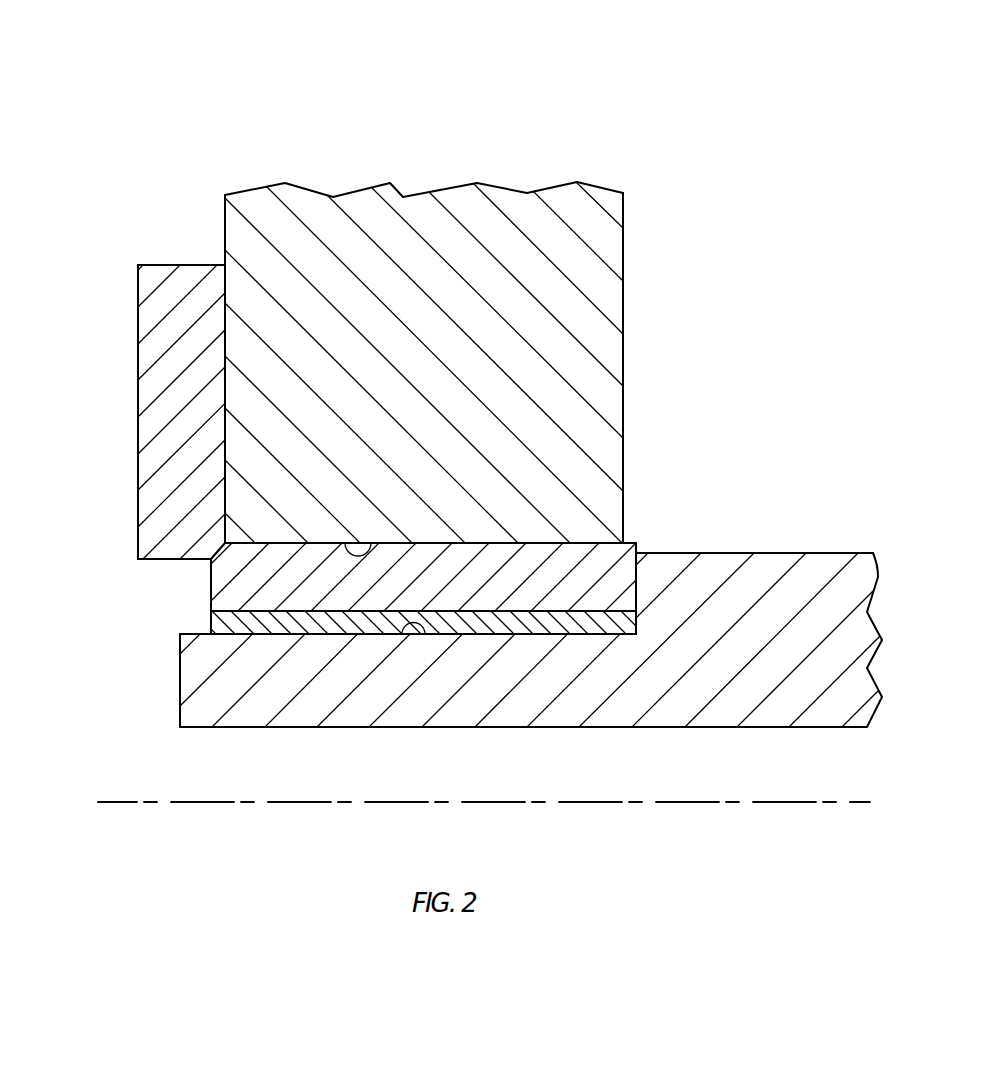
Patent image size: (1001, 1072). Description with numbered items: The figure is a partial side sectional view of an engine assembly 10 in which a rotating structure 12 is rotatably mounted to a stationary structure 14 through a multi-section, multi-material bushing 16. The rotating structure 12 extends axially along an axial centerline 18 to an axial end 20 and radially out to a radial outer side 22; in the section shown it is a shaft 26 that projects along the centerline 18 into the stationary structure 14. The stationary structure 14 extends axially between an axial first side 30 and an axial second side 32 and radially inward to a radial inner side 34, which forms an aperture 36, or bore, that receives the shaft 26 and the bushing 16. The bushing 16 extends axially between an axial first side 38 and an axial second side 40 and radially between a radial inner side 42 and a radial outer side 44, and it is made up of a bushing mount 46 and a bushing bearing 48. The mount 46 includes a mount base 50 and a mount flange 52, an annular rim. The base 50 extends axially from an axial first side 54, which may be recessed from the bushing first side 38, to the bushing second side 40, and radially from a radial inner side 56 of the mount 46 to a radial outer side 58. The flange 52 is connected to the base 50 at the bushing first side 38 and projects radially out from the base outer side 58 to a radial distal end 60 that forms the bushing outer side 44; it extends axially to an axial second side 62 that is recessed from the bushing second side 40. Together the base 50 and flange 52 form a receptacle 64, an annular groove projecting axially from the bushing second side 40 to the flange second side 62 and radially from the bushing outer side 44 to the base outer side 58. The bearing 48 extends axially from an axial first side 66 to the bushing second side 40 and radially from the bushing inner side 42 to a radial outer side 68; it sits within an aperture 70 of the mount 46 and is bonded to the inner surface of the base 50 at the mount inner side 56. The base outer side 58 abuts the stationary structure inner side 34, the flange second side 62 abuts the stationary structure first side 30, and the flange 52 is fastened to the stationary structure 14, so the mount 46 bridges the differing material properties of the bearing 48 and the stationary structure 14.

The engine assembly 10 is at (164, 73).
The rotating structure 12 is at (138, 680).
The stationary structure 14 is at (531, 172).
The bushing 16 is at (103, 514).
The axial centerline 18 is at (114, 803).
The axial end of the rotating structure 20 is at (180, 706).
The radial outer side of the rotating structure 22 is at (413, 622).
The shaft 26 is at (772, 540).
The axial first side of the stationary structure 30 is at (224, 203).
The axial second side of the stationary structure 32 is at (623, 212).
The radial inner side of the stationary structure 34 is at (370, 543).
The aperture of the stationary structure 36 is at (475, 530).
The axial first side of the bushing 38 is at (138, 343).
The axial second side of the bushing 40 is at (637, 587).
The radial inner side of the bushing 42 is at (355, 634).
The radial outer side of the bushing 44 is at (158, 265).
The bushing mount 46 is at (118, 549).
The bushing bearing 48 is at (282, 645).
The mount base 50 is at (487, 596).
The mount flange 52 is at (198, 407).
The axial first side of the base 54 is at (211, 593).
The radial inner side of the mount 56 is at (565, 611).
The radial outer side of the base 58 is at (575, 543).
The radial distal end of the flange 60 is at (147, 254).
The axial second side of the flange 62 is at (225, 323).
The receptacle 64 is at (213, 261).
The axial first side of the bearing 66 is at (211, 622).
The radial outer side of the bearing 68 is at (408, 611).
The aperture of the mount 70 is at (525, 598).